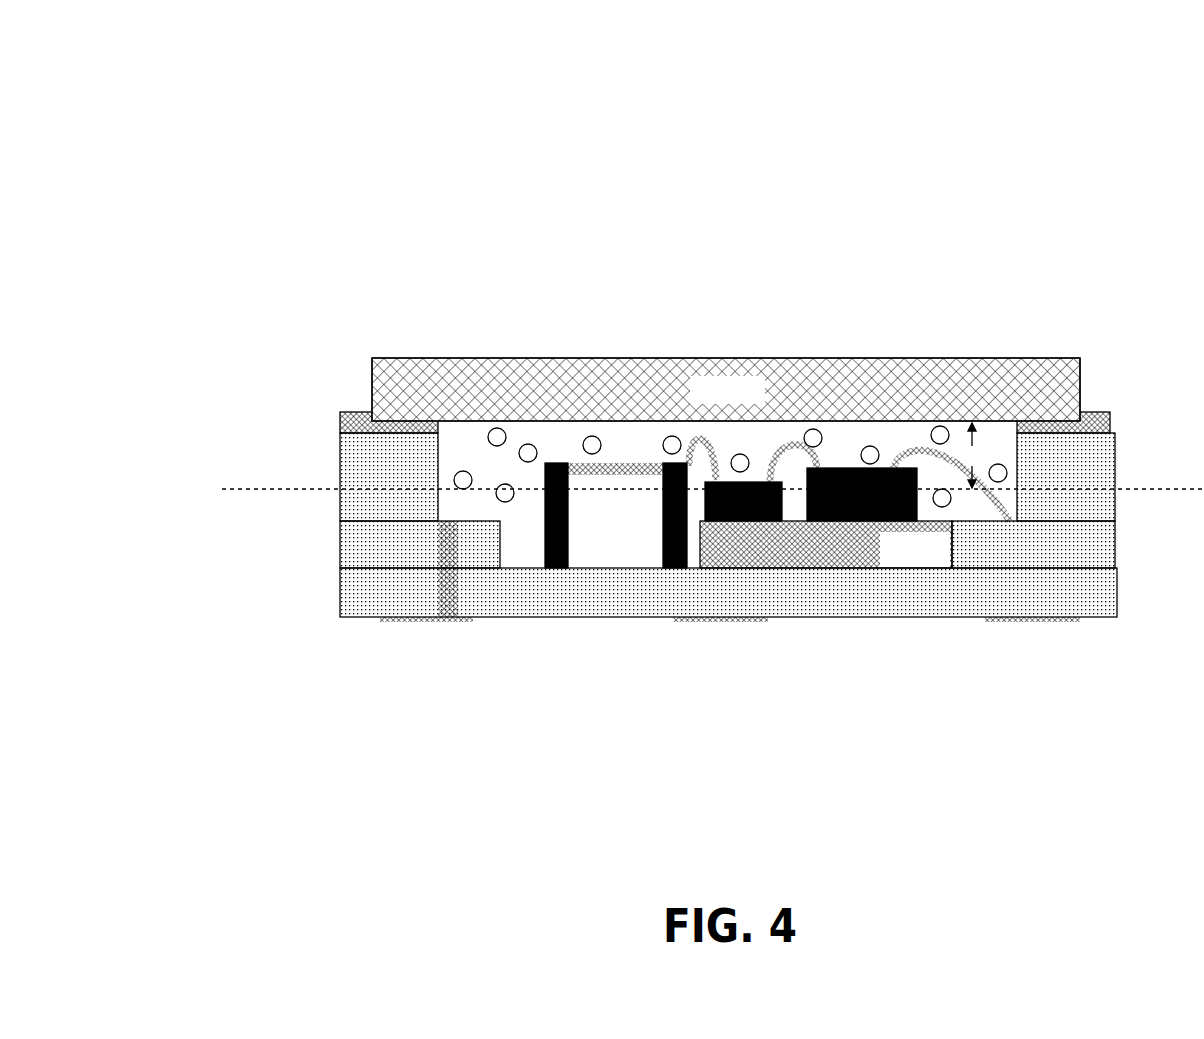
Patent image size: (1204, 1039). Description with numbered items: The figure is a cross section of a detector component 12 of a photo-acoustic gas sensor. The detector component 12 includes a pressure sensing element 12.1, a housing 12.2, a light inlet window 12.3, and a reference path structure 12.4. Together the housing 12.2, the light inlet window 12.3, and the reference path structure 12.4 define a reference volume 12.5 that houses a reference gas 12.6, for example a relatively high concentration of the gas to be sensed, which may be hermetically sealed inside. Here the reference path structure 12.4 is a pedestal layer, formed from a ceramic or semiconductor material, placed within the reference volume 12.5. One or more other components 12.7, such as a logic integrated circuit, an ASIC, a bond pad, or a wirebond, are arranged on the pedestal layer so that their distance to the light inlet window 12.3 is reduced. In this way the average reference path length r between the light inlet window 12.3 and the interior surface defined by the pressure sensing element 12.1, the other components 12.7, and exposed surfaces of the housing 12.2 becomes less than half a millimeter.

The detector component 12 is at (212, 44).
The pressure sensing element 12.1 is at (592, 530).
The housing 12.2 is at (345, 398).
The light inlet window 12.3 is at (706, 401).
The reference path structure 12.4 is at (890, 560).
The reference volume 12.5 is at (853, 432).
The reference gas 12.6 is at (497, 428).
The other components 12.7 is at (757, 523).